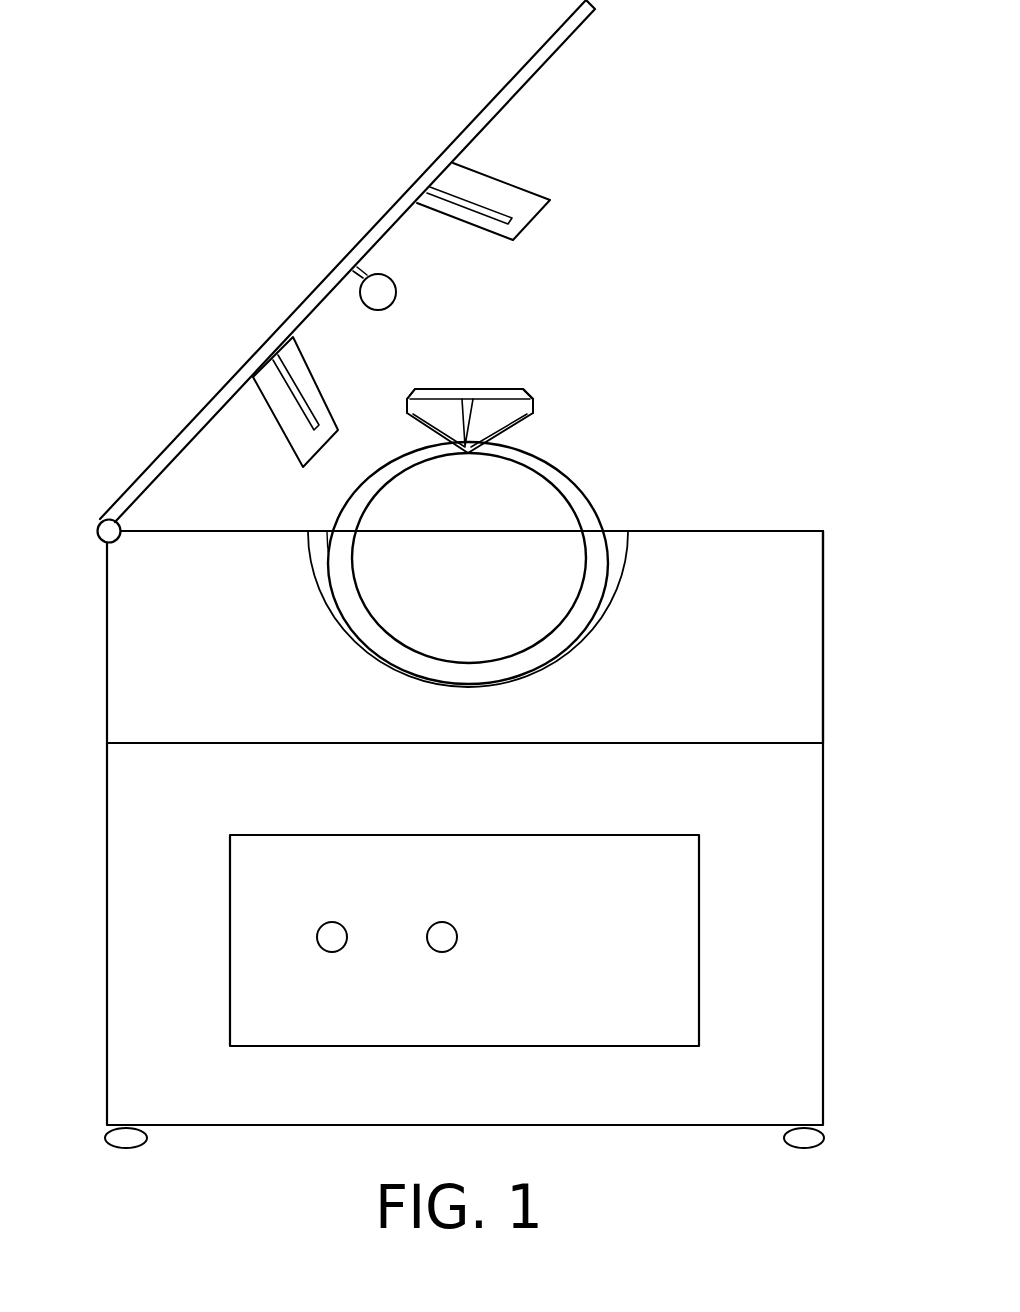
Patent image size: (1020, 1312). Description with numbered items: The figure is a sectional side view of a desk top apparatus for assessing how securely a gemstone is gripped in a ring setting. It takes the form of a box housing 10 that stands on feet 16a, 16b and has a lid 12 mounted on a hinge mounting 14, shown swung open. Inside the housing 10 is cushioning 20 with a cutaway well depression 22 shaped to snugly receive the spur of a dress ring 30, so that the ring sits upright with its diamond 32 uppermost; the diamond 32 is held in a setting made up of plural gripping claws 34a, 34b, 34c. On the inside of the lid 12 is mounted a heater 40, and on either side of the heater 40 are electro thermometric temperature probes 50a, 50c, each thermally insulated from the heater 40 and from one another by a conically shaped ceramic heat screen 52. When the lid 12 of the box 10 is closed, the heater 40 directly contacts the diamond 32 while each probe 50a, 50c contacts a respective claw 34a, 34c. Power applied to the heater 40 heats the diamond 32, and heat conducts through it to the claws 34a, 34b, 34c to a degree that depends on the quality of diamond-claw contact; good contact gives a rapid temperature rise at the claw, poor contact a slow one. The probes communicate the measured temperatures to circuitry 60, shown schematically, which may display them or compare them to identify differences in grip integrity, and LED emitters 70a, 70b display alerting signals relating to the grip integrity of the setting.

The box housing 10 is at (824, 938).
The lid 12 is at (518, 68).
The hinge mounting 14 is at (97, 531).
The foot 16a is at (125, 1148).
The foot 16b is at (804, 1148).
The cushioning 20 is at (810, 612).
The cutaway well depression 22 is at (630, 545).
The dress ring 30 is at (600, 503).
The diamond 32 is at (522, 376).
The gripping claw 34a is at (540, 404).
The gripping claw 34b is at (467, 394).
The gripping claw 34c is at (405, 400).
The heater 40 is at (397, 290).
The electro thermometric temperature probe 50a is at (503, 210).
The electro thermometric temperature probe 50c is at (272, 378).
The conically shaped ceramic heat screen 52 is at (537, 220).
The circuitry 60 is at (230, 850).
The LED emitter 70a is at (333, 952).
The LED emitter 70b is at (443, 952).